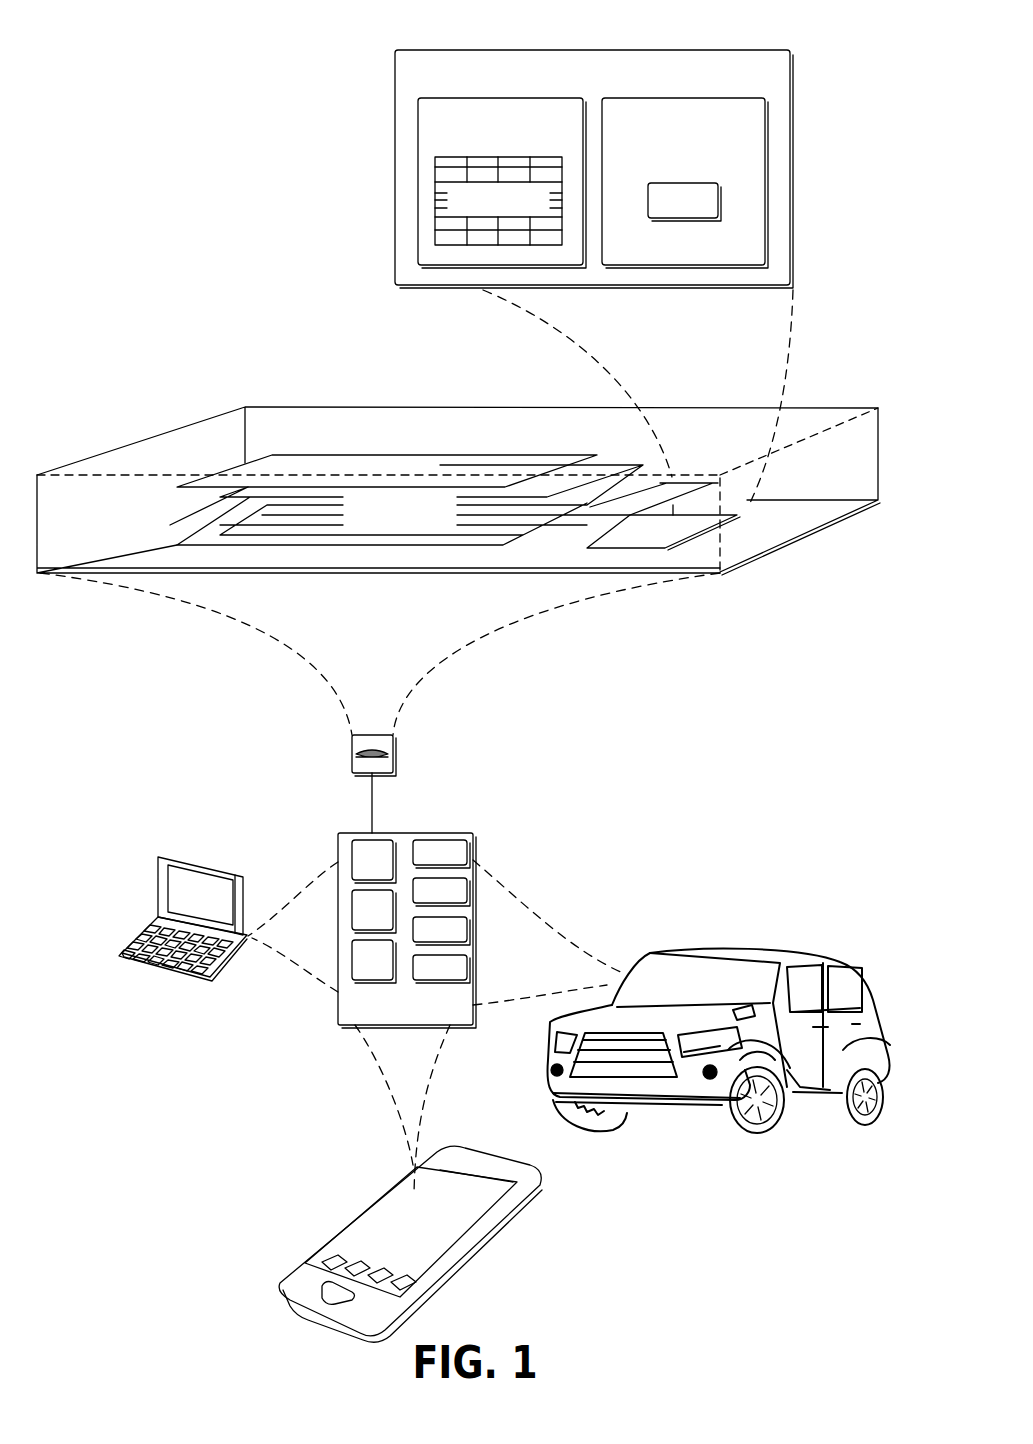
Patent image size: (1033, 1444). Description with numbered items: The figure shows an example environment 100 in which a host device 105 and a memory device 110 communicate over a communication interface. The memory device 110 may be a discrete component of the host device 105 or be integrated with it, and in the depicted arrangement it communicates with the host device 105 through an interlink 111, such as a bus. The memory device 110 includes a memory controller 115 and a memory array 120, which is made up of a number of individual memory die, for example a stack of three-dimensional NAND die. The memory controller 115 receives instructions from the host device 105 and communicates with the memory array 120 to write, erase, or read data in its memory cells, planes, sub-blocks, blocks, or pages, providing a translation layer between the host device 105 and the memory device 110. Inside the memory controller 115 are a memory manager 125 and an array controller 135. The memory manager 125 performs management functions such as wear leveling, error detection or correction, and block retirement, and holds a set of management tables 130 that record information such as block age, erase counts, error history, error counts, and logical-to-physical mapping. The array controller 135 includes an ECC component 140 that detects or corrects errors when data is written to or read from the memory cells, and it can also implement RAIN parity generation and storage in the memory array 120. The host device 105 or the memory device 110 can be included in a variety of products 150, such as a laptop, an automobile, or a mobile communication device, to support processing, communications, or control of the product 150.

The environment 100 is at (790, 30).
The host device 105 is at (338, 845).
The memory device 110 is at (190, 422).
The interlink 111 is at (372, 806).
The memory controller 115 is at (396, 53).
The memory array 120 is at (455, 455).
The memory manager 125 is at (418, 135).
The management tables 130 is at (435, 195).
The array controller 135 is at (768, 135).
The ECC component 140 is at (720, 203).
The products 150 is at (160, 855).